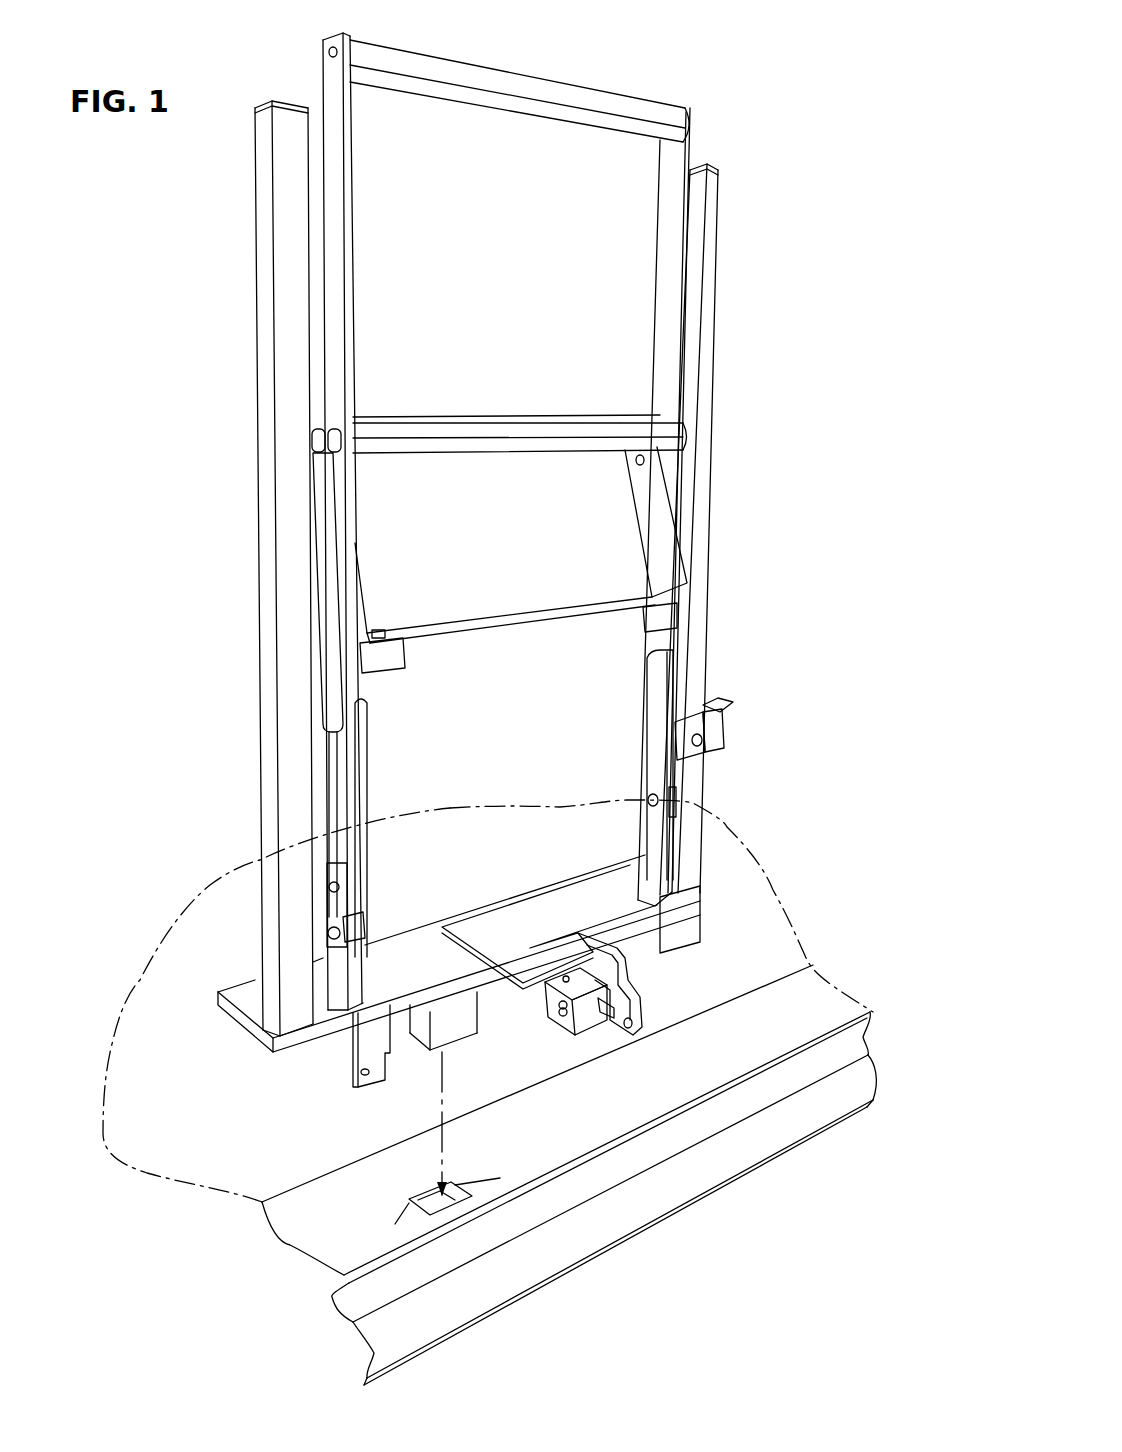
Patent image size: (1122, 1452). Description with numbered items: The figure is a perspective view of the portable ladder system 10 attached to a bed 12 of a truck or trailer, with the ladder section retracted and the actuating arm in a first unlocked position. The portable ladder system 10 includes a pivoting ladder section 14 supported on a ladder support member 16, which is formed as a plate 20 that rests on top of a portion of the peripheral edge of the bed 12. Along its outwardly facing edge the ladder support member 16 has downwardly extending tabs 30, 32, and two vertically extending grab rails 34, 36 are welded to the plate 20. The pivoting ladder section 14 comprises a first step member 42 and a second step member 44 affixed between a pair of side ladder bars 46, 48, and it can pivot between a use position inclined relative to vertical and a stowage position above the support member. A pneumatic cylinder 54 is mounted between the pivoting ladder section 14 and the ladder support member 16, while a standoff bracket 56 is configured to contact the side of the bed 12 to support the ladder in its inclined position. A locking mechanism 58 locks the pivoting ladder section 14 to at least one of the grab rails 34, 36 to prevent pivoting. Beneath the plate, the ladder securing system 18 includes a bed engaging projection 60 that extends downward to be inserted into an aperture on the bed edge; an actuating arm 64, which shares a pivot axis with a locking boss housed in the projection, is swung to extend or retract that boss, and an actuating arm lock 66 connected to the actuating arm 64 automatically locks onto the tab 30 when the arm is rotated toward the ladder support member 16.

The portable ladder system 10 is at (760, 108).
The bed 12 is at (757, 942).
The pivoting ladder section 14 is at (522, 72).
The ladder support member 16 is at (225, 963).
The ladder securing system 18 is at (575, 1115).
The plate 20 is at (426, 980).
The downwardly extending tab 30 is at (352, 1053).
The downwardly extending tab 32 is at (675, 933).
The grab rail 34 is at (258, 498).
The grab rail 36 is at (708, 385).
The first step member 42 is at (583, 88).
The second step member 44 is at (470, 455).
The side ladder bar 46 is at (335, 78).
The side ladder bar 48 is at (692, 145).
The pneumatic cylinder 54 is at (328, 605).
The standoff bracket 56 is at (497, 627).
The locking mechanism 58 is at (737, 695).
The bed engaging projection 60 is at (457, 1038).
The actuating arm 64 is at (640, 995).
The actuating arm lock 66 is at (580, 1022).